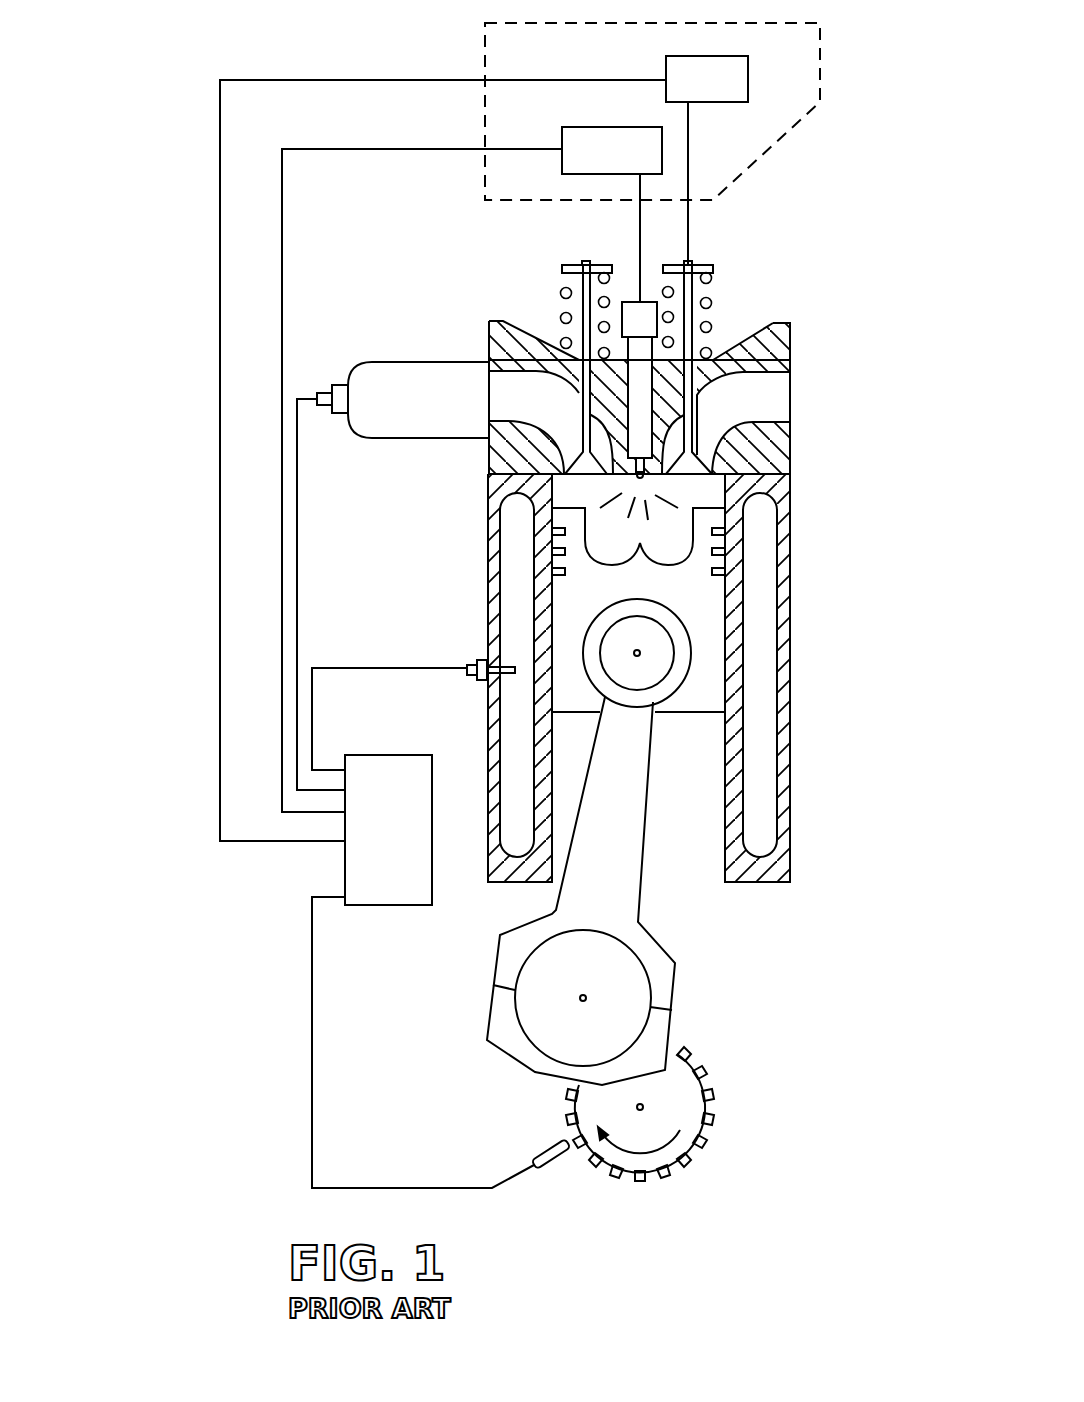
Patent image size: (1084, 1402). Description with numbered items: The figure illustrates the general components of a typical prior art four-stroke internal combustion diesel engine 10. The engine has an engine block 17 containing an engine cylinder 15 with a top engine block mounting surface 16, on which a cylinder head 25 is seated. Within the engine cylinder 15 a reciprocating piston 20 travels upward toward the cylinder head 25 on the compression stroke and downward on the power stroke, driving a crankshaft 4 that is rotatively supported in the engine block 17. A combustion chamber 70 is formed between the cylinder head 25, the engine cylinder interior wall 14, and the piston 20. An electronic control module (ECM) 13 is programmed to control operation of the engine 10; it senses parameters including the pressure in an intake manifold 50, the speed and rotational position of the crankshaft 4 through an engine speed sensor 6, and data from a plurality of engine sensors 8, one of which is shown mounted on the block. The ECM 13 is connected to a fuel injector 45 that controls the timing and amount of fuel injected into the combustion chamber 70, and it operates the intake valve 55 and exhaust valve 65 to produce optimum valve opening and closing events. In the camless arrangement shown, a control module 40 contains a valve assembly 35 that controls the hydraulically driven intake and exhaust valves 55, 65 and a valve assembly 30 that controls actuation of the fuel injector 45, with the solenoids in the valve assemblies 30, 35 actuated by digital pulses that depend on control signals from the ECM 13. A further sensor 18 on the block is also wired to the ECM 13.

The internal combustion engine 10 is at (126, 252).
The crankshaft 4 is at (682, 1100).
The engine speed sensor 6 is at (547, 1150).
The engine sensors 8 is at (343, 385).
The electronic control module (ECM) 13 is at (415, 890).
The engine cylinder interior wall 14 is at (694, 556).
The engine cylinder 15 is at (722, 752).
The top engine block mounting surface 16 is at (775, 481).
The engine block 17 is at (790, 556).
The engine sensor 18 is at (467, 666).
The reciprocating piston 20 is at (697, 623).
The cylinder head 25 is at (790, 352).
The fuel injection system valve assembly 30 is at (472, 469).
The intake/exhaust valve actuator assembly 35 is at (484, 448).
The control module 40 is at (820, 65).
The fuel injector 45 is at (623, 302).
The intake manifold 50 is at (402, 422).
The intake valve 55 is at (584, 433).
The exhaust valve 65 is at (705, 437).
The combustion chamber 70 is at (572, 500).